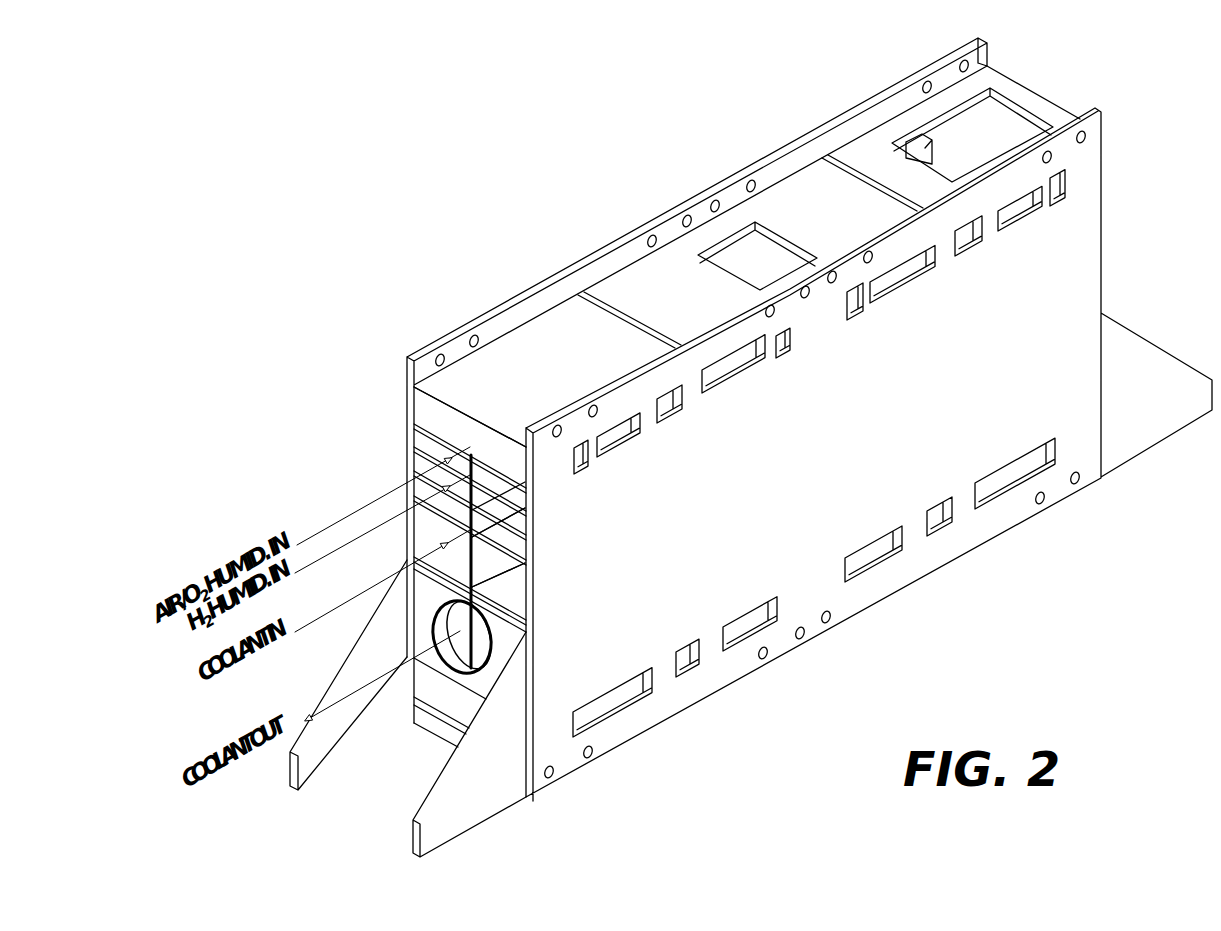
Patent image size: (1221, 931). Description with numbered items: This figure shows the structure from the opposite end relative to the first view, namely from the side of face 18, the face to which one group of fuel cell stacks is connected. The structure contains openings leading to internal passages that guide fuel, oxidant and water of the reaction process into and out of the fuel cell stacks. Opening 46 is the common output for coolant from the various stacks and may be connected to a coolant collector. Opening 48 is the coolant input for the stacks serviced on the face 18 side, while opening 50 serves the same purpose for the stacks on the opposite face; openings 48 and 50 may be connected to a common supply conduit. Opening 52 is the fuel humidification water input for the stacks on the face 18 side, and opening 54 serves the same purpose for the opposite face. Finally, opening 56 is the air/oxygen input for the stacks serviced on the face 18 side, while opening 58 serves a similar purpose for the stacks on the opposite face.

The face 18 is at (677, 693).
The opening 46 is at (440, 654).
The opening 48 is at (510, 588).
The opening 50 is at (427, 518).
The opening 52 is at (511, 538).
The opening 54 is at (425, 487).
The opening 56 is at (511, 508).
The opening 58 is at (425, 459).